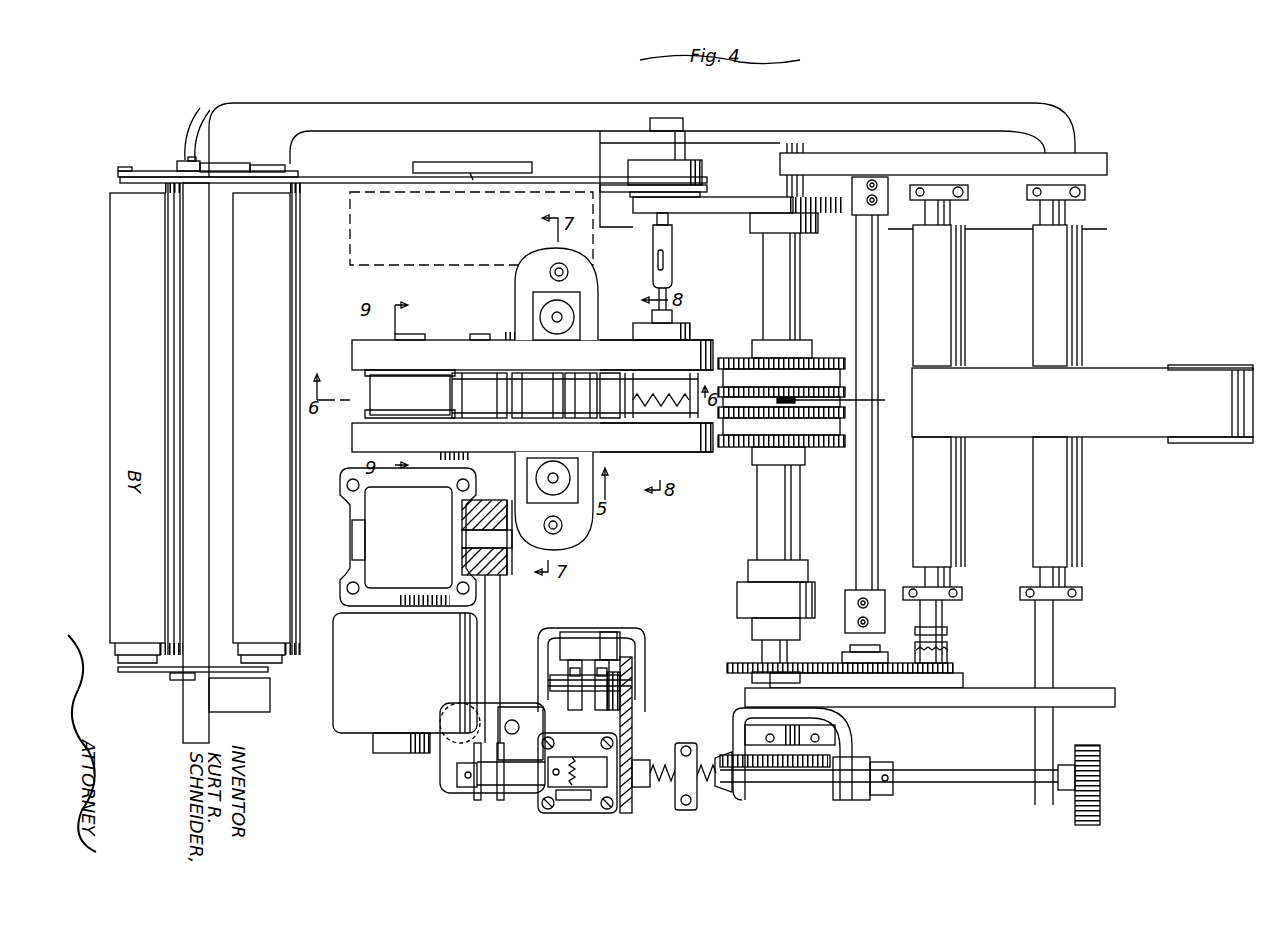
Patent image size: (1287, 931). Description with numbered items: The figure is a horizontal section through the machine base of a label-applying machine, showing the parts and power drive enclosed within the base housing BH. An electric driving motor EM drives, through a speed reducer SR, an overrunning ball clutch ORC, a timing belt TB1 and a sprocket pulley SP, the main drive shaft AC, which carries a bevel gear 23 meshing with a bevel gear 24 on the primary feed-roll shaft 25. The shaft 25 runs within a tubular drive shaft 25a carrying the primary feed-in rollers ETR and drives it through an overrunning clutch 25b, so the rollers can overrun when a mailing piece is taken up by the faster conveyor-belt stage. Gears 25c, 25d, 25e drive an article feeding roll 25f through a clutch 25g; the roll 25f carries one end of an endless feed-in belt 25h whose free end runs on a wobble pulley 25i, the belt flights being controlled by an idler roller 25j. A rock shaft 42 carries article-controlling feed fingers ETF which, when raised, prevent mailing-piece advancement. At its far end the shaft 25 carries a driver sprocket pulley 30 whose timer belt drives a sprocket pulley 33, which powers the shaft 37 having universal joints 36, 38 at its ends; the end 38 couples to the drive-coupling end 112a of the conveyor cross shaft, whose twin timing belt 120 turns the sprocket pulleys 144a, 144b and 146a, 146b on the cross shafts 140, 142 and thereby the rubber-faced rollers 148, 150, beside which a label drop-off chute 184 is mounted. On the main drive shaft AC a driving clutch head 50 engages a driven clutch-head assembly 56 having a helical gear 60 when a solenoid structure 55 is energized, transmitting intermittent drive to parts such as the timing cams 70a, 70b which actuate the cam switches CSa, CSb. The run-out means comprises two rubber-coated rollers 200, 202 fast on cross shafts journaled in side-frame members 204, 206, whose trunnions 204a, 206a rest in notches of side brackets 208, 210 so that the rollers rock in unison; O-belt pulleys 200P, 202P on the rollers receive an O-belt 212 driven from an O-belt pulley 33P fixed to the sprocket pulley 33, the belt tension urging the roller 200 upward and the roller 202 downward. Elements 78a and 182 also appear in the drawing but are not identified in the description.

The base housing BH is at (450, 110).
The side bracket 210 is at (210, 680).
The rubber-coated roller 202 is at (115, 532).
The rubber-coated roller 200 is at (272, 531).
The side-frame member 206 is at (170, 672).
The trunnion 206a is at (182, 681).
The O-belt pulley 200P is at (295, 177).
The O-belt pulley 202P is at (126, 170).
The side-frame member 204 is at (172, 160).
The trunnion 204a is at (215, 95).
The side bracket 208 is at (240, 165).
The O-belt 212 is at (545, 183).
The O-belt pulley 33P is at (704, 172).
The sprocket pulley 33 is at (640, 212).
The gear 78a is at (728, 208).
The tubular drive shaft 25a is at (760, 535).
The driver sprocket pulley 30 is at (836, 176).
The universal joint 36 is at (656, 226).
The shaft 37 is at (672, 280).
The universal joint 38 is at (652, 311).
The drive-coupling end 112a is at (672, 320).
The cross shaft 142 is at (478, 334).
The timing belt 120 is at (656, 355).
The sprocket pulley 146a is at (458, 340).
The sprocket pulley 144a is at (517, 334).
The sprocket pulley 146b is at (470, 455).
The bar 182 is at (656, 437).
The sprocket pulley 144b is at (478, 463).
The label drop-off chute 184 is at (410, 394).
The rubber-faced roller 150 is at (495, 418).
The rubber-faced roller 148 is at (560, 418).
The cross shaft 140 is at (540, 294).
The article-controlling feed fingers ETF is at (800, 390).
The primary feed-in rollers ETR is at (747, 447).
The overrunning clutch 25b is at (748, 588).
The primary feed-roll shaft 25 is at (752, 634).
The gear 25c is at (727, 669).
The gear 25d is at (862, 673).
The gear 25e is at (932, 673).
The rock shaft 42 is at (858, 509).
The idler roller 25j is at (1062, 281).
The endless feed-in belt 25h is at (1140, 428).
The wobble pulley 25i is at (1232, 446).
The article feeding roll 25f is at (935, 524).
The clutch 25g is at (947, 652).
The speed reducer SR is at (408, 537).
The overrunning ball clutch ORC is at (500, 581).
The timing belt TB1 is at (492, 615).
The electric driving motor EM is at (406, 683).
The main drive shaft AC is at (455, 775).
The cam switch CSa is at (580, 637).
The cam switch CSb is at (614, 641).
The timing cam 70a is at (555, 685).
The timing cam 70b is at (620, 693).
The helical gear 60 is at (630, 813).
The driving clutch head 50 is at (542, 800).
The solenoid structure 55 is at (578, 800).
The driven clutch-head assembly 56 is at (595, 800).
The sprocket pulley SP is at (485, 800).
The bevel gear 23 is at (722, 790).
The bevel gear 24 is at (697, 739).